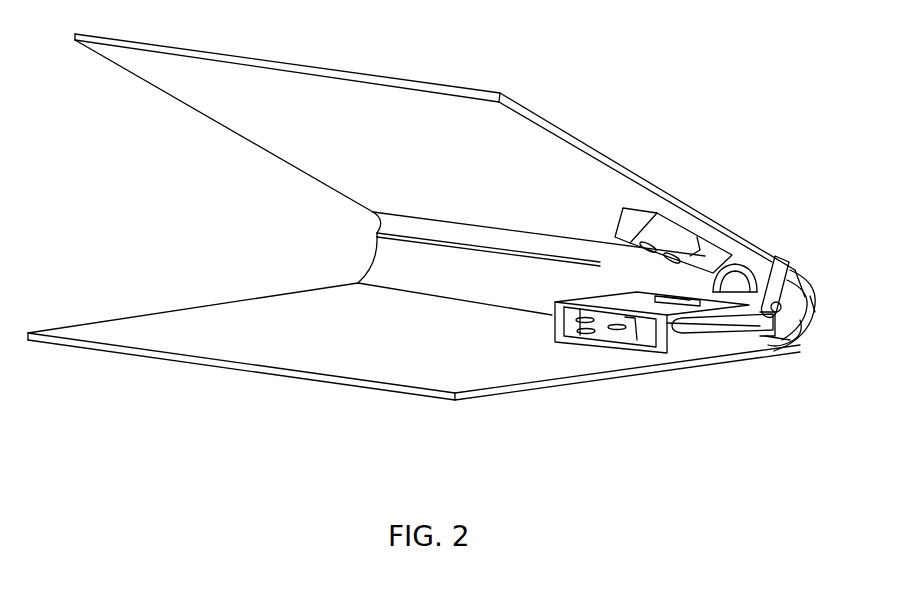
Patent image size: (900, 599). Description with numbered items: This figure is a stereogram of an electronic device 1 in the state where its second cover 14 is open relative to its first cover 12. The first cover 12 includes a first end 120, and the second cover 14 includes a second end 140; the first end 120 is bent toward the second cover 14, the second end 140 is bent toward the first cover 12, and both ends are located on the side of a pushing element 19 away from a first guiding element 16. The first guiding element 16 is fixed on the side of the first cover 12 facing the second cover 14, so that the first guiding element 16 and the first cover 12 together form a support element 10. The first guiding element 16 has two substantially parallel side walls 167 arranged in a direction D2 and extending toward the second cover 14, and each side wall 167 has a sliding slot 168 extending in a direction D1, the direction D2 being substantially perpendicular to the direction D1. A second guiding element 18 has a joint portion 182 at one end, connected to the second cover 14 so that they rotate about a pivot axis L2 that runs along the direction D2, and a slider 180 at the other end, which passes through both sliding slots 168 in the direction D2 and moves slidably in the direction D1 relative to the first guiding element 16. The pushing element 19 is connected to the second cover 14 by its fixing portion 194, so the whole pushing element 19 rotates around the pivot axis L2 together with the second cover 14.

The electronic device 1 is at (858, 176).
The support element 10 is at (617, 422).
The first cover 12 is at (520, 374).
The second cover 14 is at (678, 198).
The first guiding element 16 is at (592, 346).
The second guiding element 18 is at (833, 373).
The pushing element 19 is at (735, 275).
The first end 120 is at (812, 318).
The second end 140 is at (812, 280).
The side wall 167 is at (678, 348).
The sliding slot 168 is at (708, 330).
The slider 180 is at (637, 341).
The joint portion 182 is at (790, 341).
The fixing portion 194 is at (682, 240).
The direction D1 is at (847, 228).
The direction D2 is at (888, 360).
The pivot axis L2 is at (815, 305).